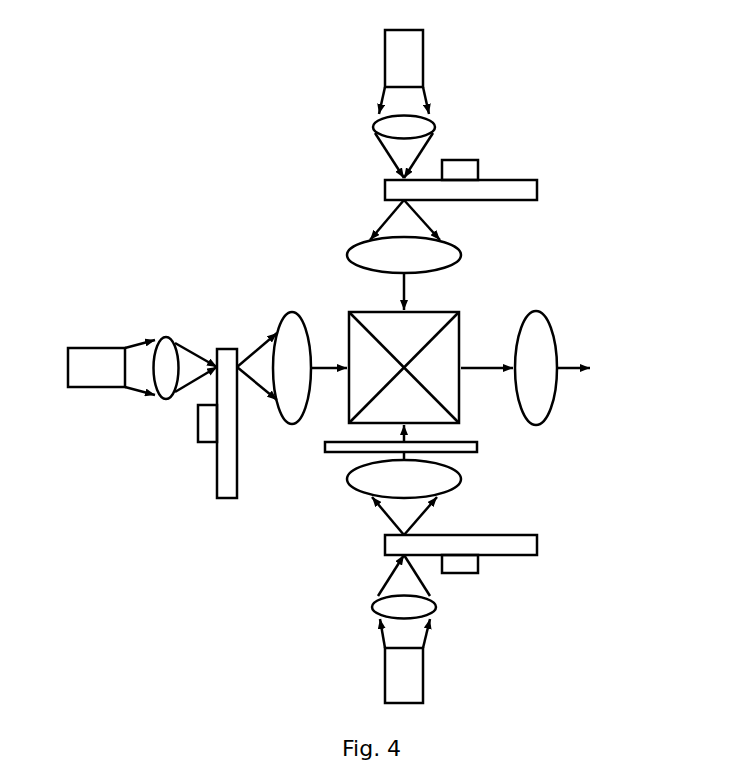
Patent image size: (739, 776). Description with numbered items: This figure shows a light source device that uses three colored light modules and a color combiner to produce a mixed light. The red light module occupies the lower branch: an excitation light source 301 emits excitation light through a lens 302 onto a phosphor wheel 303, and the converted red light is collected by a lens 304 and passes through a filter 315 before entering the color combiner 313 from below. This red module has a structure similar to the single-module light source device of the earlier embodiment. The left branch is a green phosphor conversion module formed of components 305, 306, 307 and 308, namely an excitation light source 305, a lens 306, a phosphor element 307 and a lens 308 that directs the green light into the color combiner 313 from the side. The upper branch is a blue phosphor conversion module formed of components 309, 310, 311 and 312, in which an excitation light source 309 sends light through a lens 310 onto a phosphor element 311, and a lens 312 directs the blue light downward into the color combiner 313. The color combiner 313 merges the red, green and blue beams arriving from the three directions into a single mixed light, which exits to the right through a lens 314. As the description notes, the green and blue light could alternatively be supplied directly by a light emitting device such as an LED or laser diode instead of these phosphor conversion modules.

The excitation light source 301 is at (385, 670).
The lens 302 is at (373, 607).
The phosphor wheel 303 is at (497, 535).
The lens 304 is at (353, 488).
The green module excitation light source 305 is at (92, 333).
The green module lens 306 is at (162, 338).
The green module phosphor element 307 is at (217, 475).
The green module lens 308 is at (290, 312).
The blue module excitation light source 309 is at (385, 62).
The blue module lens 310 is at (375, 130).
The blue module phosphor element 311 is at (507, 200).
The blue module lens 312 is at (350, 245).
The color combiner 313 is at (443, 310).
The output lens 314 is at (542, 312).
The filter 315 is at (488, 443).